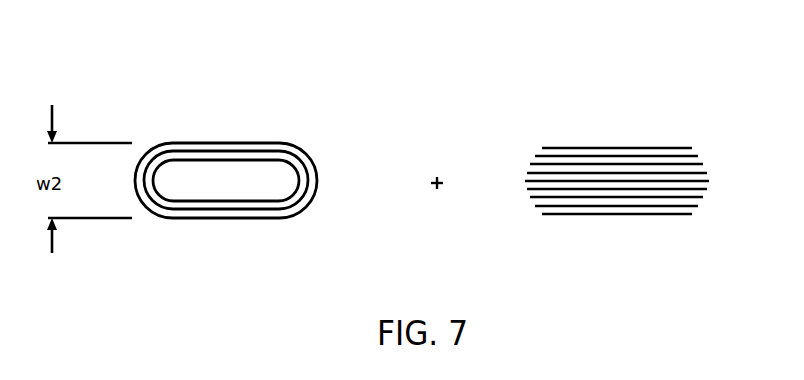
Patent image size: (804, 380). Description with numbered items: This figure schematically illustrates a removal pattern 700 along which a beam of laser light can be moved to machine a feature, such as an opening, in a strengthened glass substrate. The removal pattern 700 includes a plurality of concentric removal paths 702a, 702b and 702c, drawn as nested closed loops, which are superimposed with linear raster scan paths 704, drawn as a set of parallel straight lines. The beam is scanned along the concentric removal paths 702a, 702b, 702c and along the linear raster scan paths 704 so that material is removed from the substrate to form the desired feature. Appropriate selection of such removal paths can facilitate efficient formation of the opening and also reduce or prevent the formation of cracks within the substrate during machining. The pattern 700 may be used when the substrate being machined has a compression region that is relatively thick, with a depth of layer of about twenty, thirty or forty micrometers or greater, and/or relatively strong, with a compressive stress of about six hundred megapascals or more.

The removal pattern 700 is at (502, 52).
The concentric removal path 702a is at (305, 150).
The concentric removal path 702b is at (310, 175).
The concentric removal path 702c is at (198, 157).
The linear raster scan paths 704 is at (630, 152).